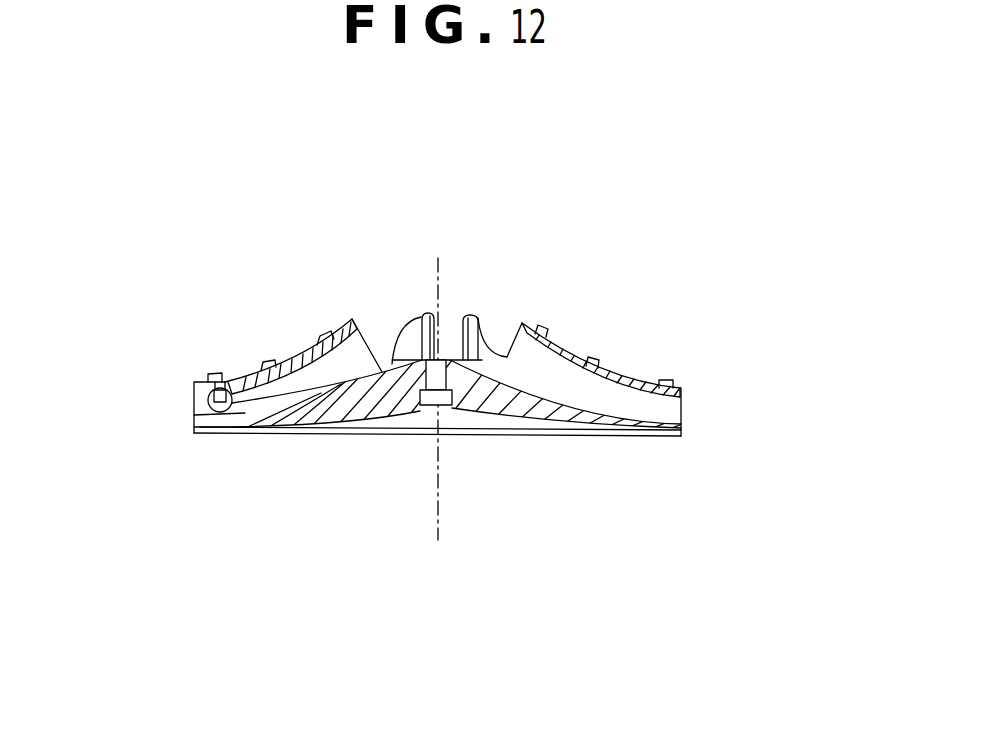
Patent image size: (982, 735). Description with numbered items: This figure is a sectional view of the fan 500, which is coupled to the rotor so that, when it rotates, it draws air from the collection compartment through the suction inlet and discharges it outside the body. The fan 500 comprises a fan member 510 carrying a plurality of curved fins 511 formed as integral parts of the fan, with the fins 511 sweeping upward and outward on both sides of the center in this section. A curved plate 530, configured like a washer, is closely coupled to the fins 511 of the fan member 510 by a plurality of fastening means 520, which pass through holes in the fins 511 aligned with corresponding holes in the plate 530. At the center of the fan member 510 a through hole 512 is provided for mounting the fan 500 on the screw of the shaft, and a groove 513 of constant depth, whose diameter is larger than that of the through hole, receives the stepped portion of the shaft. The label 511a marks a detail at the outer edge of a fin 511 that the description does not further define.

The fan 500 is at (667, 249).
The fan member 510 is at (687, 428).
The curved fin 511 is at (355, 351).
The roller 511a is at (194, 412).
The through hole 512 is at (442, 350).
The groove 513 is at (424, 405).
The fastening means 520 is at (266, 362).
The curved plate 530 is at (687, 389).